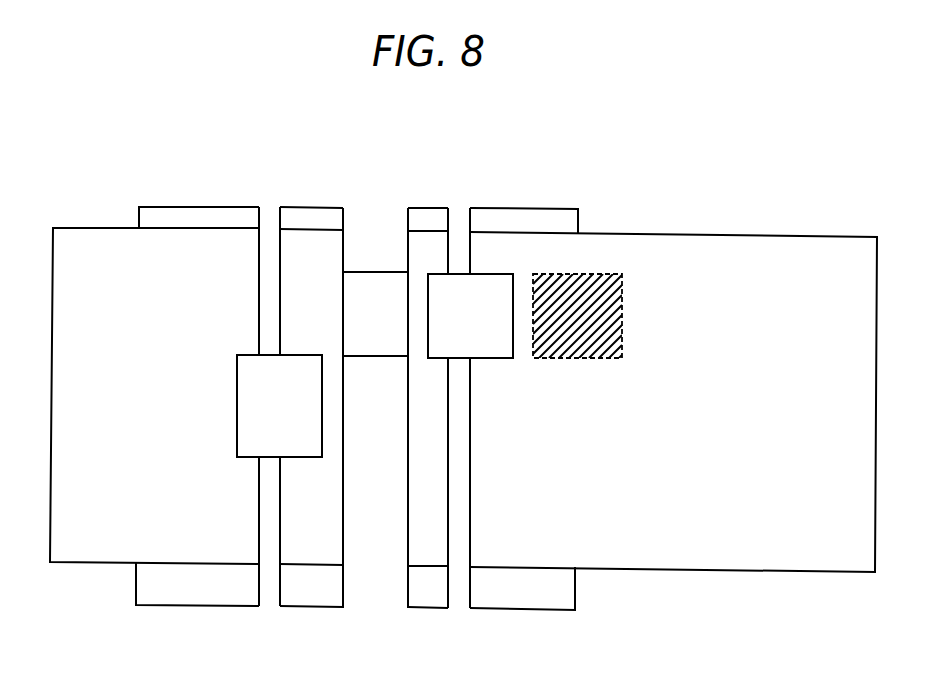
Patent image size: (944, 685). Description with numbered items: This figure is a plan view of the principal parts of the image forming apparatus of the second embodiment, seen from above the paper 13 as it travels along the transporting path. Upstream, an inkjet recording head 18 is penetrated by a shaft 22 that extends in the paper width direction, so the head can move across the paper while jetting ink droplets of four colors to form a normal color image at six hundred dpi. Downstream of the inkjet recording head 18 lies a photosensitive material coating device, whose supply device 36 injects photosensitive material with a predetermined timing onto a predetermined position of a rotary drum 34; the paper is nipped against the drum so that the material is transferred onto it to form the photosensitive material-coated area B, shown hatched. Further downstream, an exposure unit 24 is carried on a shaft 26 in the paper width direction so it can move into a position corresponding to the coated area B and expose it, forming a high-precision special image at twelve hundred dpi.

The paper 13 is at (77, 253).
The inkjet recording head 18 is at (253, 405).
The shaft 22 is at (266, 517).
The exposure unit 24 is at (493, 345).
The shaft 26 is at (462, 475).
The rotary drum 34 is at (355, 293).
The supply device 36 is at (377, 233).
The photosensitive material-coated area B is at (623, 308).